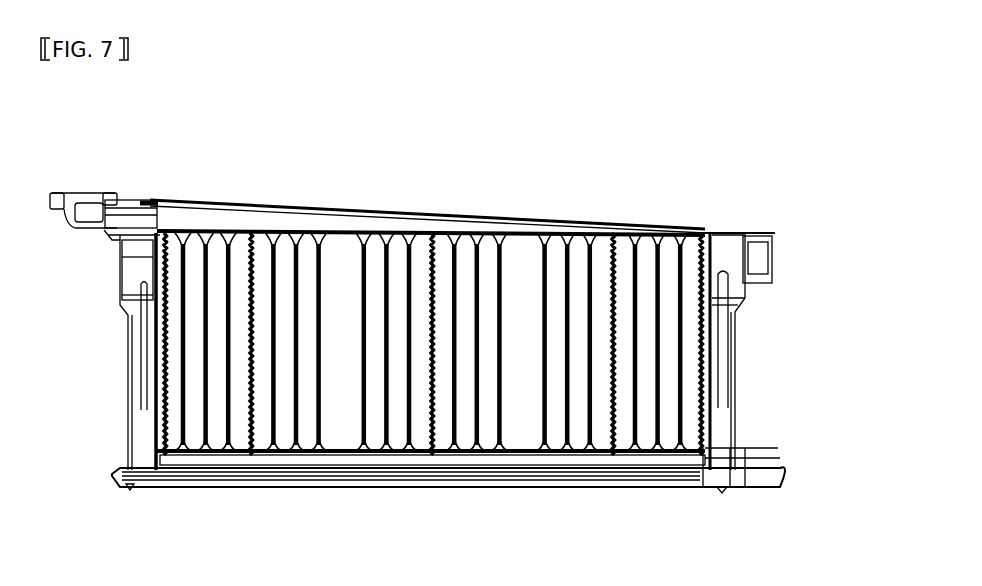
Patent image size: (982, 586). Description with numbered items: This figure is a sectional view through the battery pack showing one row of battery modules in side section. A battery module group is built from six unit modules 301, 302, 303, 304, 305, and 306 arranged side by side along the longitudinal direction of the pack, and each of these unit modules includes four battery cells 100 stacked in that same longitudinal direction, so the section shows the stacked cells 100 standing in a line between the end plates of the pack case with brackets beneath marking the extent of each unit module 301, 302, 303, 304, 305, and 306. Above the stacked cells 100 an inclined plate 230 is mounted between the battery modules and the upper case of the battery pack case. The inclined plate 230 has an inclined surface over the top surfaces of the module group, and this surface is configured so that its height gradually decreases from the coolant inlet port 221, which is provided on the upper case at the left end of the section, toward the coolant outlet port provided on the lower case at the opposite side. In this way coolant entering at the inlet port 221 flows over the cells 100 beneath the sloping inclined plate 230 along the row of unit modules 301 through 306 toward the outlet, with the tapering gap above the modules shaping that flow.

The battery cell 100 is at (409, 391).
The coolant inlet port 221 is at (84, 192).
The inclined plate 230 is at (220, 200).
The unit module 301 is at (173, 506).
The unit module 302 is at (330, 506).
The unit module 303 is at (420, 506).
The unit module 304 is at (520, 506).
The unit module 305 is at (605, 506).
The unit module 306 is at (618, 506).